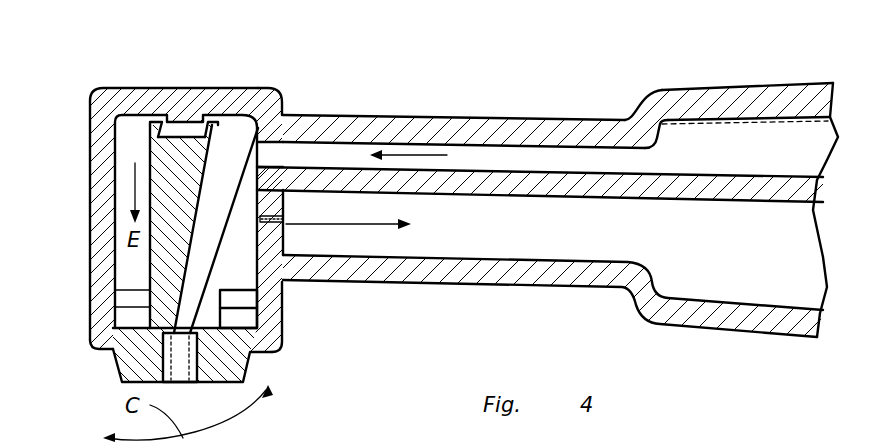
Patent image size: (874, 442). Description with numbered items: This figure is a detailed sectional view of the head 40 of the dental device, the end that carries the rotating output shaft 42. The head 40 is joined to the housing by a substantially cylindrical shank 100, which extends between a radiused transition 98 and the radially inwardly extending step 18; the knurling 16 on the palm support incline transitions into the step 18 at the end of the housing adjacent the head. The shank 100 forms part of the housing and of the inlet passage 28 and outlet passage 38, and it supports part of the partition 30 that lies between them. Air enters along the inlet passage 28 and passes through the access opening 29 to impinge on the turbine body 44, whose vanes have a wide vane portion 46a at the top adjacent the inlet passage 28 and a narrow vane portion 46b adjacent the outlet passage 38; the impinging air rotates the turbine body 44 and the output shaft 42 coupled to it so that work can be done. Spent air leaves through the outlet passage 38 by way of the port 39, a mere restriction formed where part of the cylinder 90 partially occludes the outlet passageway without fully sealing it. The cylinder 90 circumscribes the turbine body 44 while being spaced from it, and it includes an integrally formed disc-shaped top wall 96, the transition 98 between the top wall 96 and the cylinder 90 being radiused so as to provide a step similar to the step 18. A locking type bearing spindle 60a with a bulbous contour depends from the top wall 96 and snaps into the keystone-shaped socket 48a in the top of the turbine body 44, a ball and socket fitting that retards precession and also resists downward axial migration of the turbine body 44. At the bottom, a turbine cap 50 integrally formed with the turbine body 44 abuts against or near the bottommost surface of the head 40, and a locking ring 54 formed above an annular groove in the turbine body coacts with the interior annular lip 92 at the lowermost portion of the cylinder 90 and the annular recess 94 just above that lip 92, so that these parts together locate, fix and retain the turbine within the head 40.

The cylinder 90 is at (97, 122).
The spindle 60a is at (177, 122).
The disc-shaped top wall 96 is at (203, 113).
The wide vane portion 46a is at (238, 148).
The head 40 is at (376, 61).
The shank 100 is at (395, 118).
The step 18 is at (627, 120).
The knurling 16 is at (723, 90).
The transition 98 is at (280, 103).
The socket 48a is at (157, 143).
The access opening 29 is at (260, 153).
The partition 30 is at (640, 177).
The inlet passage 28 is at (806, 157).
The turbine body 44 is at (195, 206).
The port 39 is at (283, 210).
The outlet passage 38 is at (793, 261).
The narrow vane portion 46b is at (150, 270).
The locking ring 54 is at (250, 300).
The annular recess 94 is at (263, 320).
The interior annular lip 92 is at (284, 350).
The turbine cap 50 is at (102, 342).
The output shaft 42 is at (262, 369).